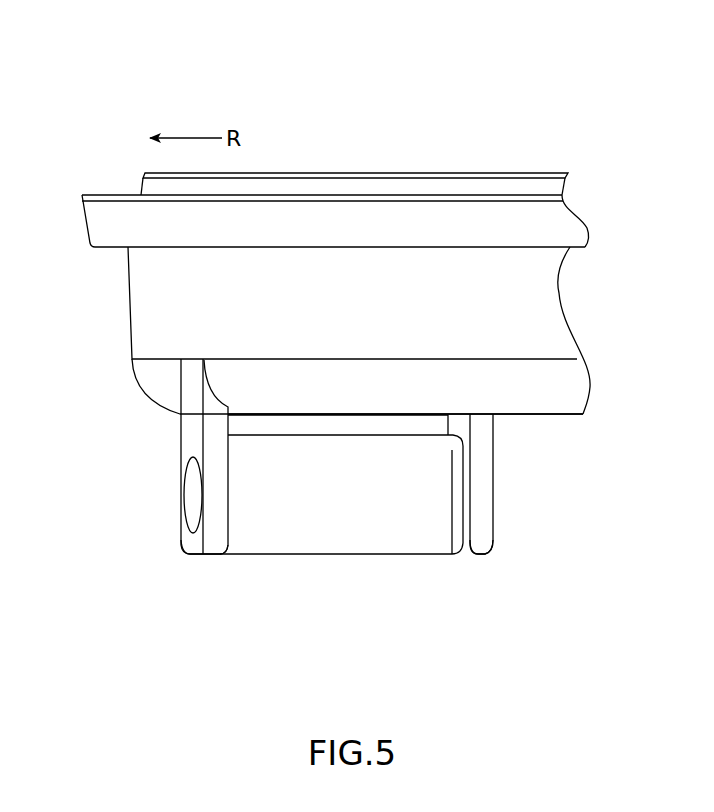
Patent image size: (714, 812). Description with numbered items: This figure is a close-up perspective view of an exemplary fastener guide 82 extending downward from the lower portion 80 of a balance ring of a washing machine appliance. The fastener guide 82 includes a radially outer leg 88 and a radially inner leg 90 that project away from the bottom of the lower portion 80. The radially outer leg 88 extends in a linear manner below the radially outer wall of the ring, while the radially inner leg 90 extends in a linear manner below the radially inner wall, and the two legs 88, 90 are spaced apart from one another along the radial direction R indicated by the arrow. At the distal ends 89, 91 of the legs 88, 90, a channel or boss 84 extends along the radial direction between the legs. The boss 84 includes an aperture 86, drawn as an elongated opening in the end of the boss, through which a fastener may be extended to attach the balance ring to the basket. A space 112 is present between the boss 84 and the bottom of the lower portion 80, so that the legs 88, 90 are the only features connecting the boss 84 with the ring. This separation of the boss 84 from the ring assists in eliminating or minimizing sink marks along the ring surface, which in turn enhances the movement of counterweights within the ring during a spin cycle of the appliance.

The lower portion 80 is at (525, 105).
The fastener guide 82 is at (326, 542).
The boss 84 is at (415, 528).
The aperture 86 is at (184, 506).
The radially outer leg 88 is at (134, 478).
The distal end of radially outer leg 89 is at (200, 564).
The radially inner leg 90 is at (482, 440).
The distal end of radially inner leg 91 is at (489, 570).
The space 112 is at (370, 424).